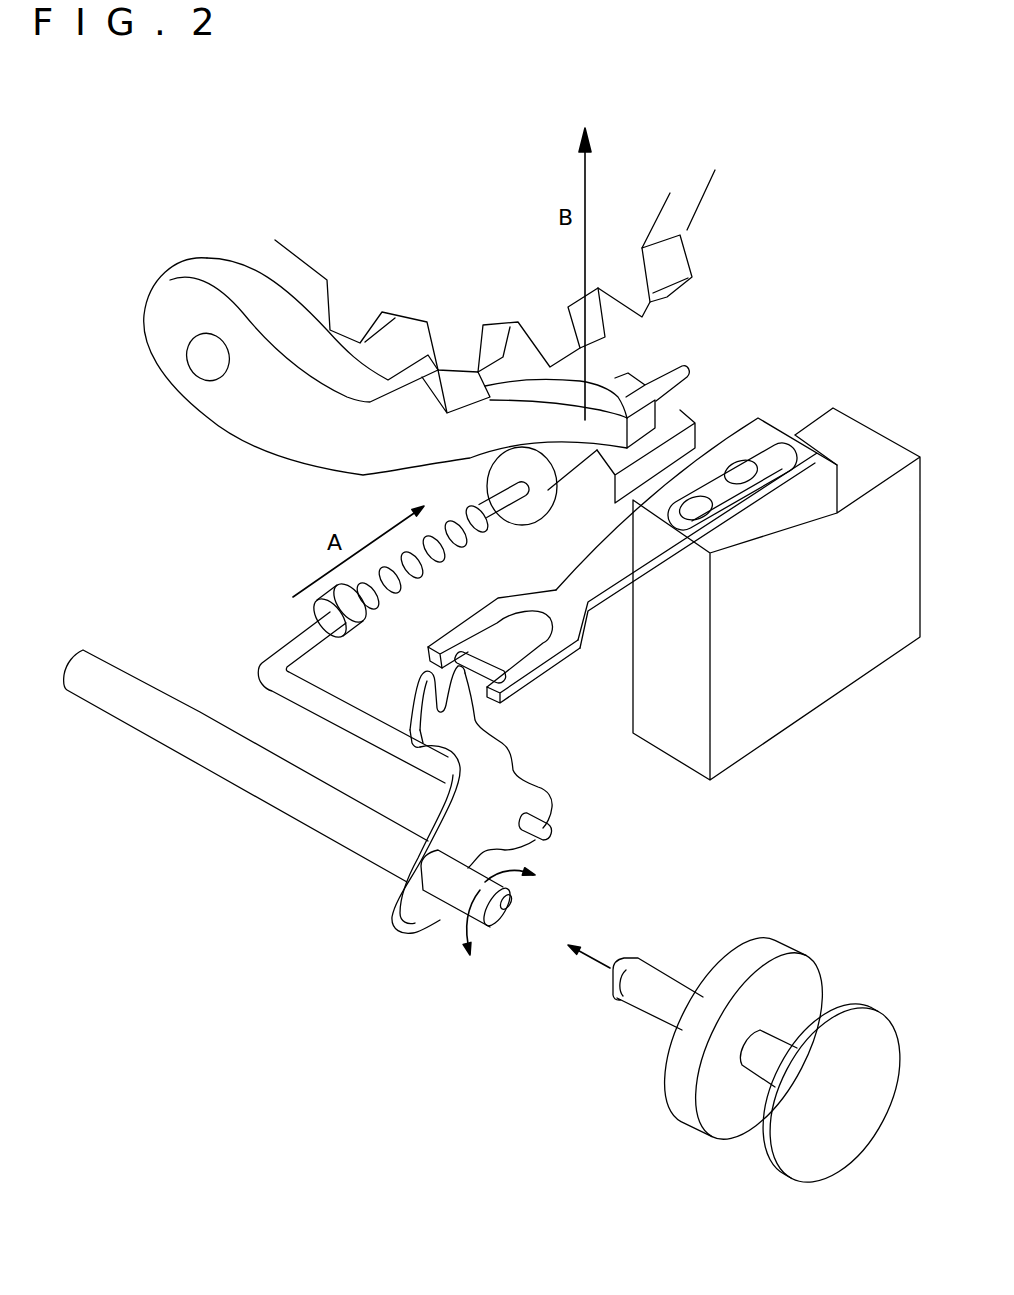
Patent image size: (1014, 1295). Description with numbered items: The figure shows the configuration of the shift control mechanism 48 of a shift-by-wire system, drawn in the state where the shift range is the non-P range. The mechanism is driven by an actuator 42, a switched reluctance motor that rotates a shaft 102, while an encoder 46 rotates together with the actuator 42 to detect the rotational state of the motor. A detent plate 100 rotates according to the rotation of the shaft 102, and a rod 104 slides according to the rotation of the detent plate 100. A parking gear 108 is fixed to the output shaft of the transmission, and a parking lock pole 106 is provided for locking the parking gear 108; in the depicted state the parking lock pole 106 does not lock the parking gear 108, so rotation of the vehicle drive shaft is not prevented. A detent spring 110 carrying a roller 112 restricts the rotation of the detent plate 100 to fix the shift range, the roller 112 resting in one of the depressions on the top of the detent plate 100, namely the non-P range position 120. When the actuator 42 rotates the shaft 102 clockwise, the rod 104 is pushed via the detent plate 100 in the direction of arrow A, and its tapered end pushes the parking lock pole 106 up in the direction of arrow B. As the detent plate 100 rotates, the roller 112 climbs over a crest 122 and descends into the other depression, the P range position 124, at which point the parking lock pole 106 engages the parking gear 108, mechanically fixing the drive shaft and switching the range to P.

The parking gear 108 is at (443, 247).
The parking lock pole 106 is at (227, 405).
The shift control mechanism 48 is at (713, 356).
The detent spring 110 is at (603, 574).
The roller 112 is at (500, 698).
The non-P range position 120 is at (490, 633).
The P range position 124 is at (438, 674).
The crest 122 is at (505, 740).
The detent plate 100 is at (420, 913).
The shaft 102 is at (207, 750).
The rod 104 is at (273, 660).
The actuator 42 is at (763, 958).
The encoder 46 is at (853, 1005).